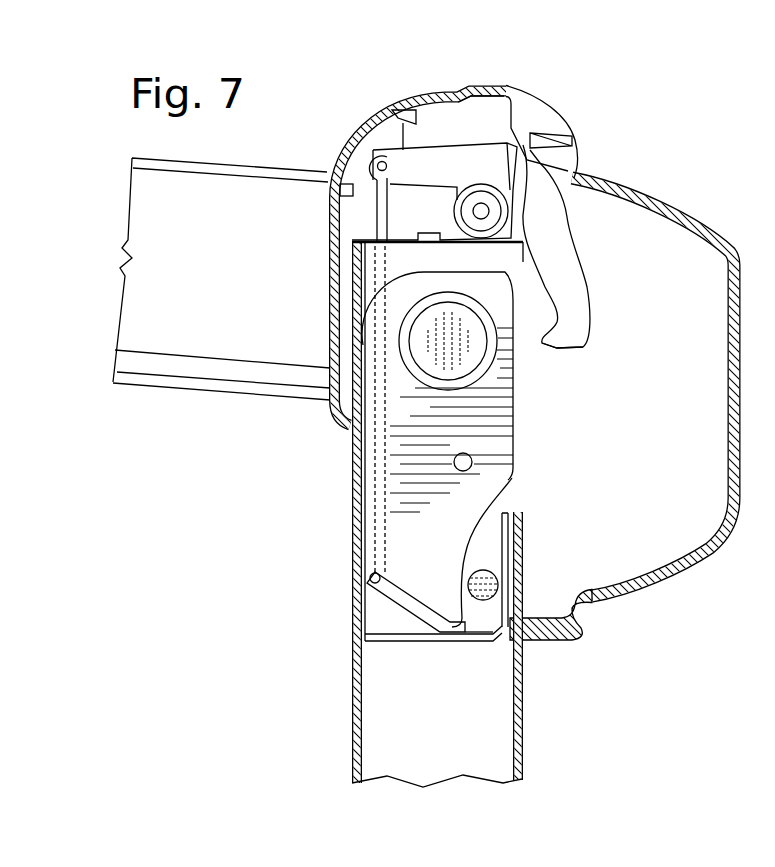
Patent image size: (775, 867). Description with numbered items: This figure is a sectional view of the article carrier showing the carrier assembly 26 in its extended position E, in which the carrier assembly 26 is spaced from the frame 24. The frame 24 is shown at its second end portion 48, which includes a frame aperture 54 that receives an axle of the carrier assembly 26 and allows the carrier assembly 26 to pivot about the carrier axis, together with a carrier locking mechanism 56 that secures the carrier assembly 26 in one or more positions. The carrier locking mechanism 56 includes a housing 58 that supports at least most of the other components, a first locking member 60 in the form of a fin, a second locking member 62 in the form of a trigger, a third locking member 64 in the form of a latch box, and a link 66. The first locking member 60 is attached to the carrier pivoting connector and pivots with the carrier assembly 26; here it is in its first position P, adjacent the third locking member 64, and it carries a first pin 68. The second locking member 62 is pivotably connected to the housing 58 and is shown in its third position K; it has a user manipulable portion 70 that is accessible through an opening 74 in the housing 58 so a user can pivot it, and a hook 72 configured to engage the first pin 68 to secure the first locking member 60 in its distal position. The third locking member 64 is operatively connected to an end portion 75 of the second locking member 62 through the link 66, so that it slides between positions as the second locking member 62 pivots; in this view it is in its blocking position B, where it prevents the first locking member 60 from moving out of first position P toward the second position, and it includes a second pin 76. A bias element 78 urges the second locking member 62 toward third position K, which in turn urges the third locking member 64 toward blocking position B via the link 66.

The frame 24 is at (518, 738).
The carrier assembly 26 is at (222, 192).
The second end portion 48 is at (352, 652).
The frame aperture 54 is at (478, 325).
The carrier locking mechanism 56 is at (664, 182).
The housing 58 is at (628, 600).
The first locking member 60 is at (370, 573).
The second locking member 62 is at (533, 188).
The third locking member 64 is at (483, 620).
The link 66 is at (364, 487).
The first pin 68 is at (472, 462).
The user manipulable portion 70 is at (486, 100).
The hook 72 is at (578, 349).
The opening 74 is at (408, 115).
The end portion 75 is at (374, 160).
The second pin 76 is at (490, 585).
The bias element 78 is at (466, 233).
The third position K is at (572, 250).
The extended position E is at (210, 373).
The blocking position B is at (488, 547).
The first position P is at (410, 588).